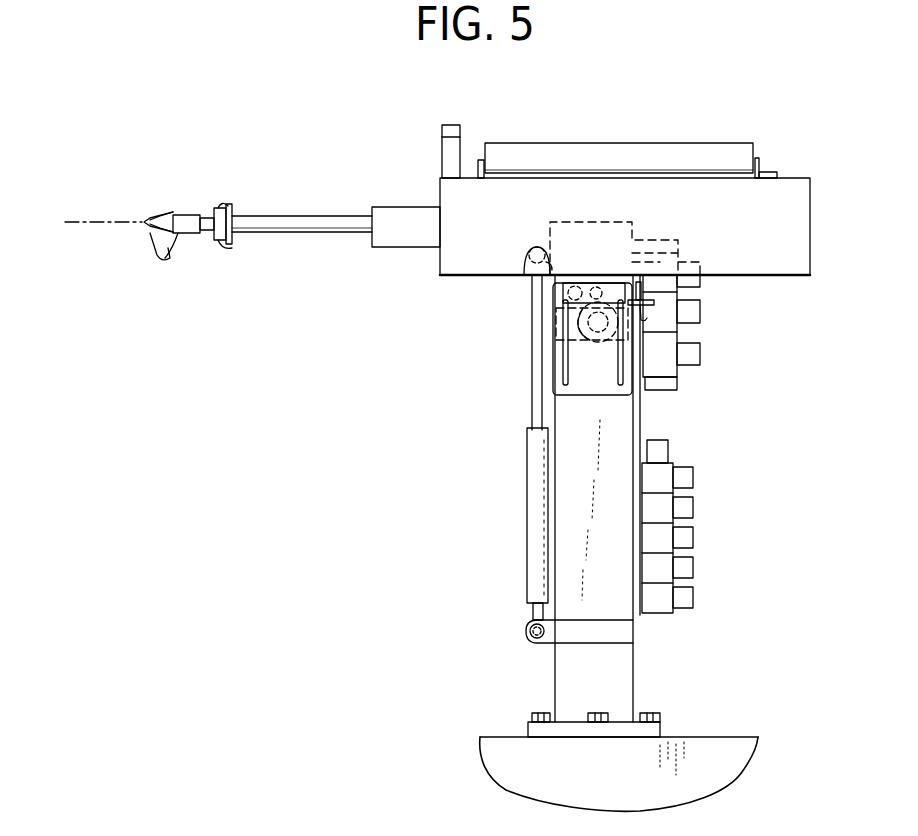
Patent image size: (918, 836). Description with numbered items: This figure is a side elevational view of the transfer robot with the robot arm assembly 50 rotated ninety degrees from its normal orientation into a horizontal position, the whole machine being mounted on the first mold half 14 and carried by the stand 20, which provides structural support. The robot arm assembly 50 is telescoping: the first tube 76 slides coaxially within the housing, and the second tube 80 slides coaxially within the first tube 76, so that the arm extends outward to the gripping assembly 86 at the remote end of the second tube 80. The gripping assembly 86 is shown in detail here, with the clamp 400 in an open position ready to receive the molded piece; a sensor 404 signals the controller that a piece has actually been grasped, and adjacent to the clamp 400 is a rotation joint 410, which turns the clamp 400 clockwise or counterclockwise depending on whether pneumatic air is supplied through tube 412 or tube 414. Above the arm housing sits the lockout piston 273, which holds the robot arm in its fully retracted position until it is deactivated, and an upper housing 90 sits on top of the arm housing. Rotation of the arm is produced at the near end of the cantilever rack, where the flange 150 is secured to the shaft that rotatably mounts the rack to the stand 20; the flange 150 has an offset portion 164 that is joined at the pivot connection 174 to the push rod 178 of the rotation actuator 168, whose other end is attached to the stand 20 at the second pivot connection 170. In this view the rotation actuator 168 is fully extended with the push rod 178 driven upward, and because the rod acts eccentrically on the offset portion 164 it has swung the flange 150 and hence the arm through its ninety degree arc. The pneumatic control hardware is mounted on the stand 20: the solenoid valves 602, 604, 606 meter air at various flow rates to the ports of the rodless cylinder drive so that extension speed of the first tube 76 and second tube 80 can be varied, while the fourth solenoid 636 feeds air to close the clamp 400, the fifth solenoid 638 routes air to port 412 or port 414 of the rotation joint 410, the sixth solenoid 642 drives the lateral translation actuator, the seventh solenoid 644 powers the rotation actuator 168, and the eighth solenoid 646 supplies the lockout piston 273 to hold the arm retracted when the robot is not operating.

The clamp 400 is at (150, 212).
The sensor 404 is at (152, 248).
The gripping assembly 86 is at (184, 196).
The rotation joint 410 is at (216, 240).
The pneumatic tube (port) 412 is at (215, 208).
The pneumatic tube (port) 414 is at (226, 249).
The second tube 80 is at (300, 216).
The first tube 76 is at (392, 207).
The robot arm assembly 50 is at (400, 264).
The offset portion 164 is at (556, 244).
The lockout piston 273 is at (487, 115).
The upper housing 90 is at (588, 143).
The flange 150 is at (605, 222).
The pivot connection 174 is at (528, 270).
The push rod 178 is at (532, 350).
The stand 20 is at (636, 684).
The solenoid valve 602 is at (702, 280).
The solenoid valve 604 is at (701, 310).
The solenoid valve 606 is at (701, 353).
The fourth solenoid 636 is at (694, 478).
The fifth solenoid 638 is at (694, 508).
The eighth solenoid 646 is at (694, 538).
The sixth solenoid 642 is at (694, 568).
The seventh solenoid 644 is at (694, 598).
The rotation actuator 168 is at (512, 521).
The second pivot connection 170 is at (528, 636).
The first mold half 14 is at (706, 737).